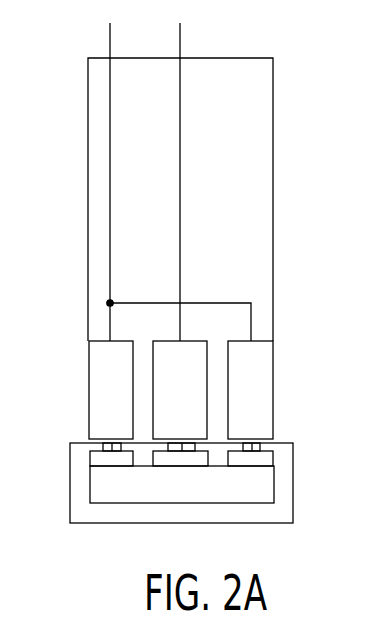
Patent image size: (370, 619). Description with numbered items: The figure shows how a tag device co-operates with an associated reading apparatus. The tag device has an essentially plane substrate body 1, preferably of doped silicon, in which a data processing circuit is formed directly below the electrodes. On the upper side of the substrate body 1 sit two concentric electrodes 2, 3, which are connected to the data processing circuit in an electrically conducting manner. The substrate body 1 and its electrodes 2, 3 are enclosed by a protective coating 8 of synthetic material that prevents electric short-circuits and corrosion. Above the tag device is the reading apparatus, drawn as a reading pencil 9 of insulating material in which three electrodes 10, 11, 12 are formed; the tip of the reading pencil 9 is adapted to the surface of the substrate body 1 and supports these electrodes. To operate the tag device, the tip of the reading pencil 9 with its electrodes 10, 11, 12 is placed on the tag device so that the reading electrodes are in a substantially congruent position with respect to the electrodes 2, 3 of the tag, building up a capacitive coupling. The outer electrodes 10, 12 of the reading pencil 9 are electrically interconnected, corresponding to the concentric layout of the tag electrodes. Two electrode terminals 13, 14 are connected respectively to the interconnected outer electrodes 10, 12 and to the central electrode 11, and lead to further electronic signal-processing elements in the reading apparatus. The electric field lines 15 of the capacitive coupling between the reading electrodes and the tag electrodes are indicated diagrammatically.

The substrate body 1 is at (102, 482).
The electrode 2 is at (92, 460).
The electrode 3 is at (213, 458).
The protective coating 8 is at (293, 509).
The reading pencil 9 is at (220, 142).
The electrode 10 is at (106, 381).
The electrode 11 is at (192, 375).
The electrode 12 is at (248, 402).
The electrode terminal 13 is at (110, 37).
The electrode terminal 14 is at (180, 37).
The electric field lines 15 is at (267, 445).